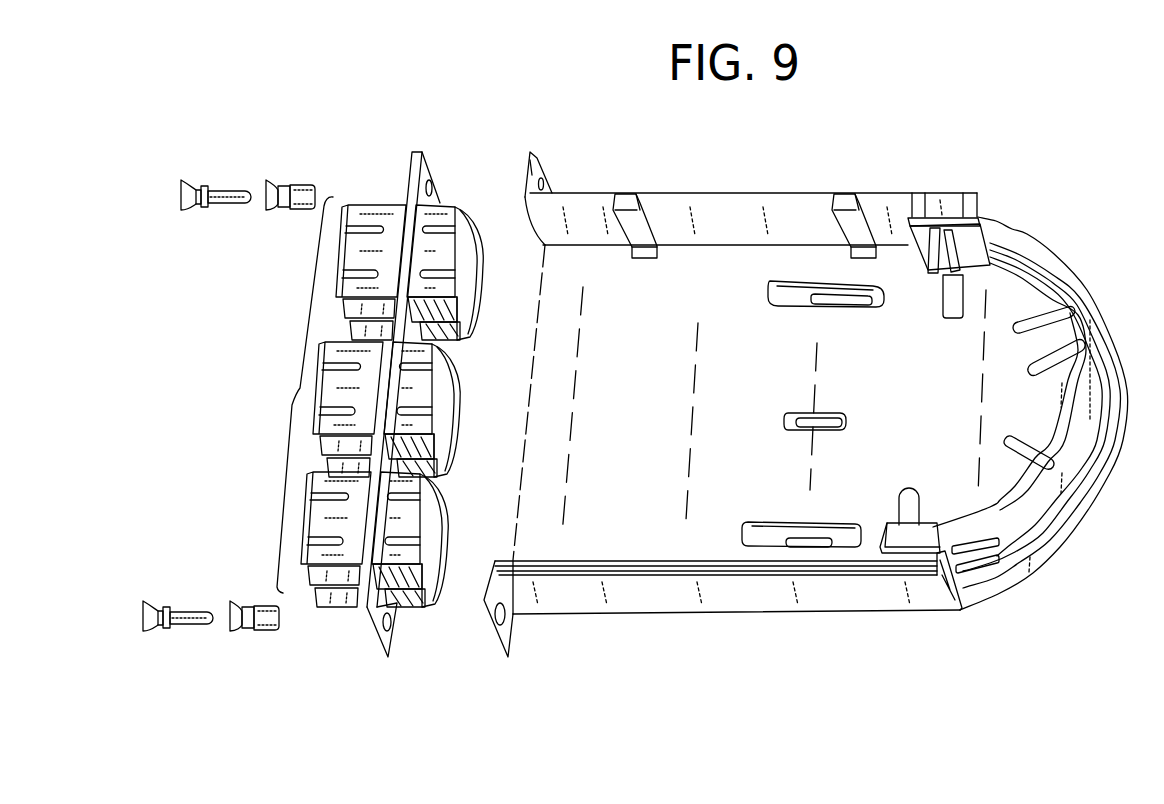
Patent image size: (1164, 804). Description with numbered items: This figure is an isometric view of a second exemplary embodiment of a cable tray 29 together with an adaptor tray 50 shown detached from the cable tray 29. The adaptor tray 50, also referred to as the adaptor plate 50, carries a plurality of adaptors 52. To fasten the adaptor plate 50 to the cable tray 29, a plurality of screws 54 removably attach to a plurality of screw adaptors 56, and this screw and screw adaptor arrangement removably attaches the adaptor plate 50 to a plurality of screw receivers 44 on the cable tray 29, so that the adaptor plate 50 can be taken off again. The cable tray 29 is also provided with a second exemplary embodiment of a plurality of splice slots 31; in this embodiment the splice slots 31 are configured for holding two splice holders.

The cable tray 29 is at (1075, 155).
The splice slots 31 is at (830, 515).
The screw receivers 44 is at (524, 629).
The adaptor tray 50 is at (388, 666).
The adaptors 52 is at (295, 393).
The screws 54 is at (176, 640).
The screw adaptors 56 is at (257, 640).